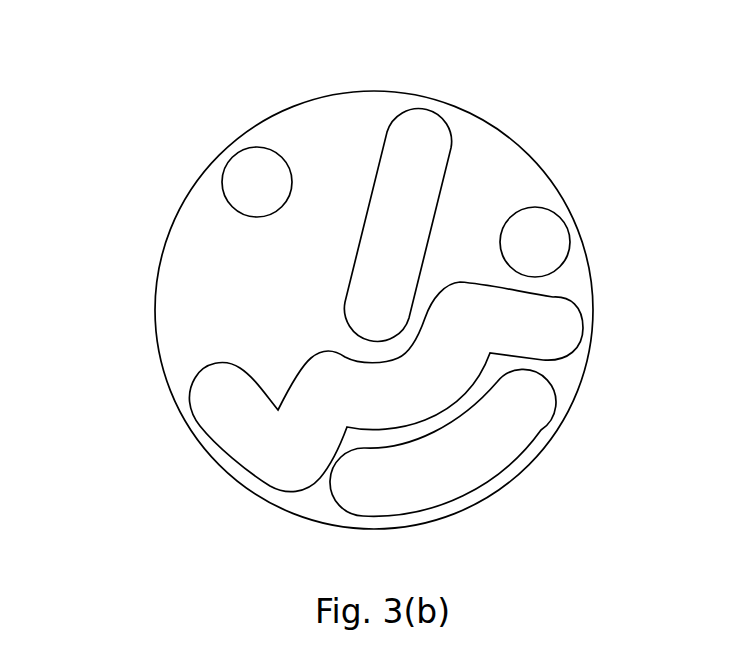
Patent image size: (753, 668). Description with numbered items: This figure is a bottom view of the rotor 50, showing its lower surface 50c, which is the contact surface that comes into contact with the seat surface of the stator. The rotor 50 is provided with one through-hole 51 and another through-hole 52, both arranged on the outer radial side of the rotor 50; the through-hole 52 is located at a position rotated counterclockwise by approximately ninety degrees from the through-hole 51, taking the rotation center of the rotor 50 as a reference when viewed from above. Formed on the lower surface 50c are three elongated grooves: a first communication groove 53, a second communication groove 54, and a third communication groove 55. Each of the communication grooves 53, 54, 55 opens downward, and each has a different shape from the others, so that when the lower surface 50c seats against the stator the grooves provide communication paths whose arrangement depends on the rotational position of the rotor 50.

The rotor 50 is at (359, 281).
The lower surface 50c is at (200, 300).
The through-hole 51 is at (237, 173).
The through-hole 52 is at (545, 252).
The first communication groove 53 is at (425, 143).
The second communication groove 54 is at (498, 440).
The third communication groove 55 is at (547, 323).